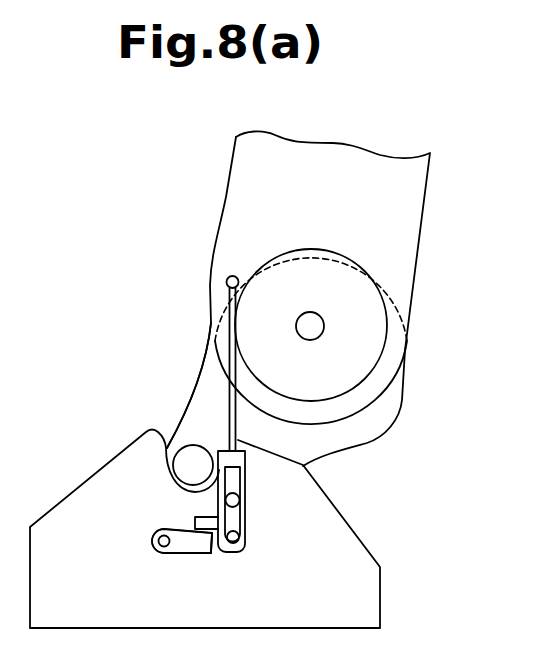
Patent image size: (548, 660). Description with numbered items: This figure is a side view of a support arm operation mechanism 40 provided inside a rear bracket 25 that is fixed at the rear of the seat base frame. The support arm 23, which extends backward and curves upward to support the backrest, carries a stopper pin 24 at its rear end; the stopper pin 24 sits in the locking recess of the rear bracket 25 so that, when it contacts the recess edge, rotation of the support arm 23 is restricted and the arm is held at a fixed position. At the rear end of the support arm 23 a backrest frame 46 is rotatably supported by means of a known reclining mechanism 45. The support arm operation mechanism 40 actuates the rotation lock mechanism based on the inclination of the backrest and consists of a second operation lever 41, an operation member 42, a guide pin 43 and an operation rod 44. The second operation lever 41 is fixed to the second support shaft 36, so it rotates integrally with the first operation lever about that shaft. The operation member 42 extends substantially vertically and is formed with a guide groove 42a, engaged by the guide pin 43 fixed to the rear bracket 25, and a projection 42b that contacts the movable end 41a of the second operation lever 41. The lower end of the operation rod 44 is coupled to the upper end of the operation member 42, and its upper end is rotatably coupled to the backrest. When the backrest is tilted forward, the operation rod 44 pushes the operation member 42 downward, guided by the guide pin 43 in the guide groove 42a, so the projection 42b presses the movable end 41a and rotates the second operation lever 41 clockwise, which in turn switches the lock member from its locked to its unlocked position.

The backrest frame 46 is at (231, 168).
The reclining mechanism 45 is at (386, 341).
The operation rod 44 is at (229, 393).
The guide pin 43 is at (240, 491).
The operation member 42 is at (246, 512).
The guide groove 42a is at (243, 537).
The projection 42b is at (195, 518).
The second operation lever 41 is at (181, 554).
The movable end 41a is at (212, 553).
The support arm operation mechanism 40 is at (128, 572).
The second support shaft 36 is at (158, 541).
The rear bracket 25 is at (351, 528).
The stopper pin 24 is at (179, 443).
The support arm 23 is at (200, 378).